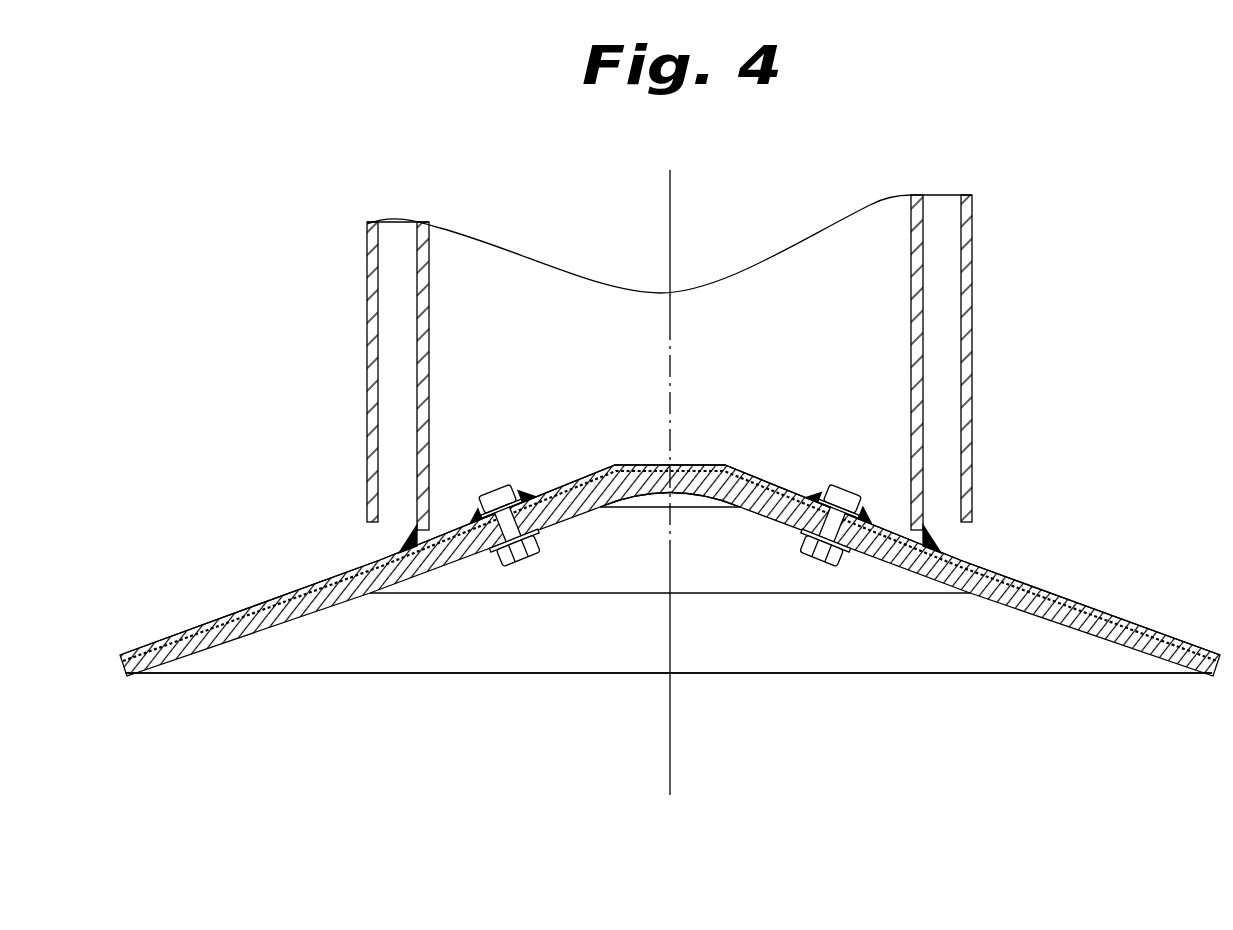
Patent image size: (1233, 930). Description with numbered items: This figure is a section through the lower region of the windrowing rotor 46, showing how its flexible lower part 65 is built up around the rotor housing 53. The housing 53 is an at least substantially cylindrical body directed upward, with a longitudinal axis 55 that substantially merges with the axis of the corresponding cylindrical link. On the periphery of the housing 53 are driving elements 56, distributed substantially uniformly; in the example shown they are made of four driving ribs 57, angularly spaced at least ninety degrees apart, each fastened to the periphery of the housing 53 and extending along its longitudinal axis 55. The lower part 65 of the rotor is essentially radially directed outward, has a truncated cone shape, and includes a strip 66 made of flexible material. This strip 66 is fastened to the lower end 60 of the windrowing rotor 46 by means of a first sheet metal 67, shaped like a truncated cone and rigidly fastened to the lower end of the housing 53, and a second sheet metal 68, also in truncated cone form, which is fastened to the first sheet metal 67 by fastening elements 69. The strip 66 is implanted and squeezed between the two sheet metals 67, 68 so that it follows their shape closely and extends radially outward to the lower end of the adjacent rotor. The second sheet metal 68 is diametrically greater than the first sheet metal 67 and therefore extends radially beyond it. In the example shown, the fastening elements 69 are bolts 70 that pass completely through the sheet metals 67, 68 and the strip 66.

The windrowing rotor 46 is at (917, 732).
The housing 53 is at (912, 322).
The longitudinal axis 55 is at (670, 703).
The driving elements 56 is at (357, 388).
The driving rib 57 is at (367, 312).
The lower end 60 is at (540, 763).
The lower part 65 is at (324, 687).
The strip 66 is at (232, 600).
The first sheet metal 67 is at (569, 480).
The second sheet metal 68 is at (768, 517).
The fastening elements 69 is at (494, 471).
The bolts 70 is at (536, 554).